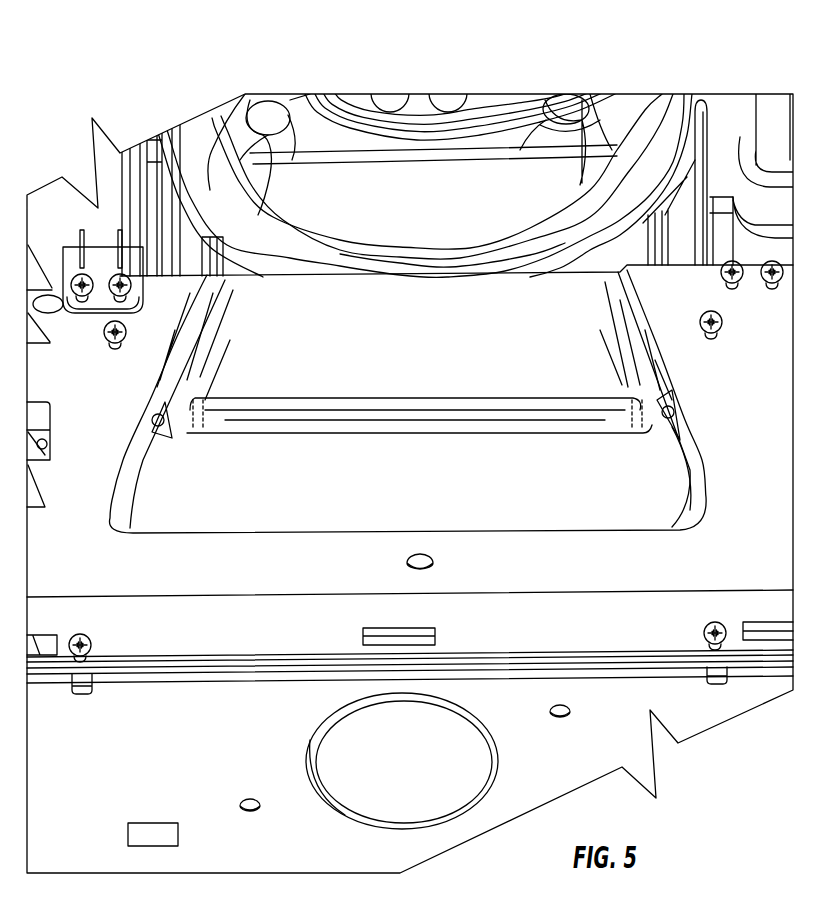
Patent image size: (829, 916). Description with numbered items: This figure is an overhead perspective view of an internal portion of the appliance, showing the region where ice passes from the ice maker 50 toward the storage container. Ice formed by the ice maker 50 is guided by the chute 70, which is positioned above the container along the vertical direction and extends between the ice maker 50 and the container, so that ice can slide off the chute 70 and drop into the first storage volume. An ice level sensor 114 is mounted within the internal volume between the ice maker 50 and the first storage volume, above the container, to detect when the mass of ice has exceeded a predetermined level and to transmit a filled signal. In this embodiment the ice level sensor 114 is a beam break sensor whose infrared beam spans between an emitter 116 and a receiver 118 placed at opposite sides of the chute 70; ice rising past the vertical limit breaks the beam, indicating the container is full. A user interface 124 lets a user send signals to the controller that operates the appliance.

The ice maker 50 is at (252, 98).
The chute 70 is at (567, 347).
The ice level sensor 114 is at (717, 426).
The emitter 116 is at (167, 428).
The receiver 118 is at (663, 422).
The user interface 124 is at (276, 741).